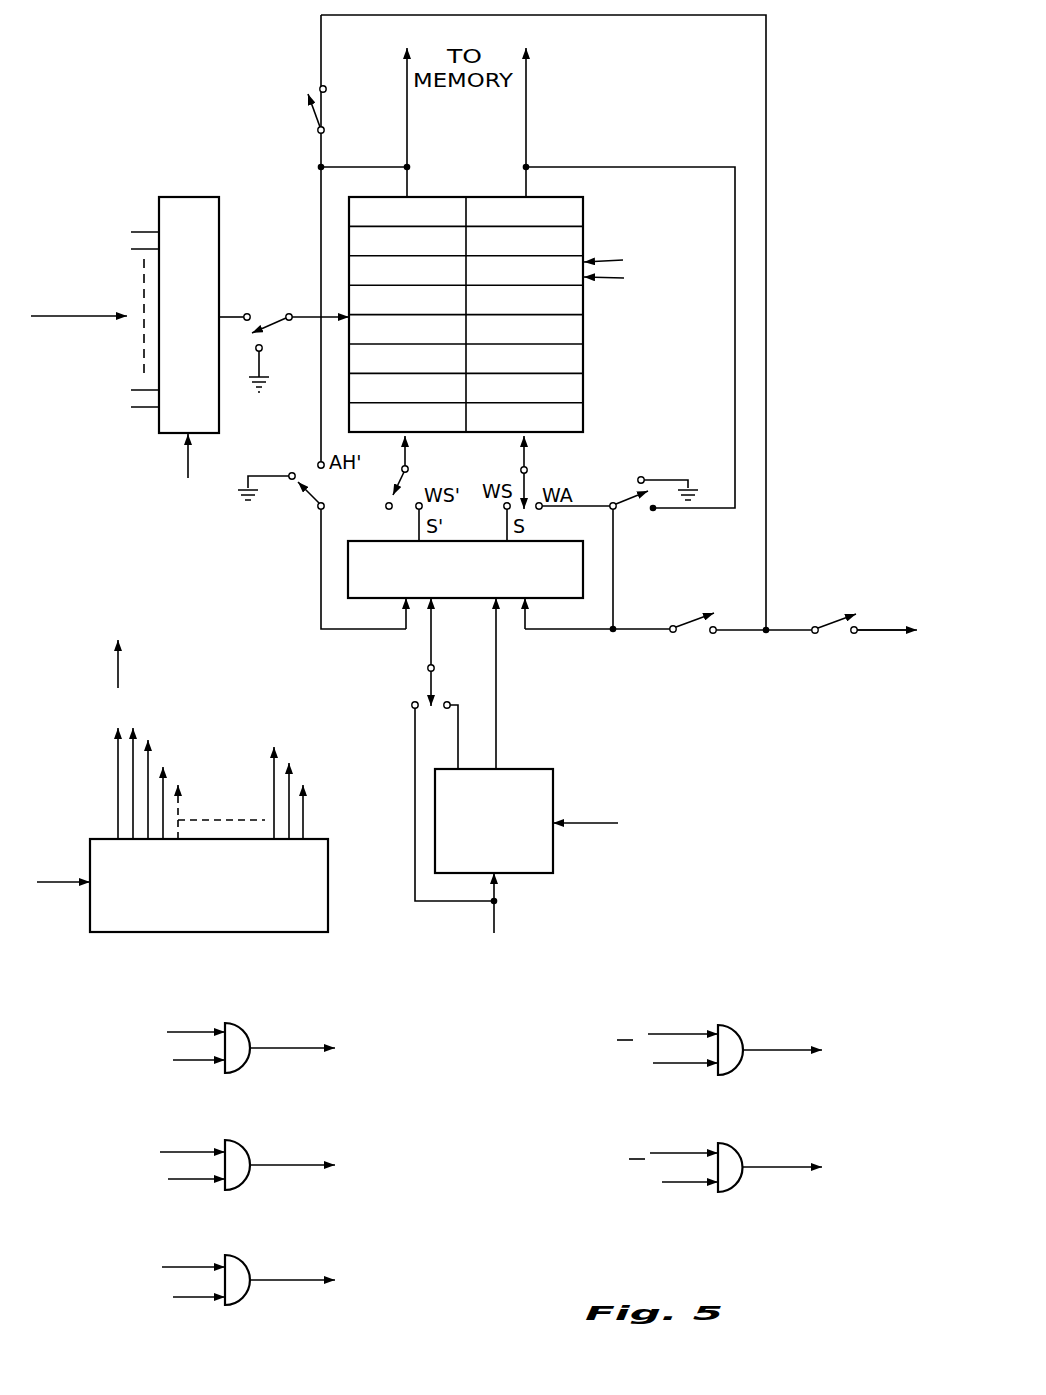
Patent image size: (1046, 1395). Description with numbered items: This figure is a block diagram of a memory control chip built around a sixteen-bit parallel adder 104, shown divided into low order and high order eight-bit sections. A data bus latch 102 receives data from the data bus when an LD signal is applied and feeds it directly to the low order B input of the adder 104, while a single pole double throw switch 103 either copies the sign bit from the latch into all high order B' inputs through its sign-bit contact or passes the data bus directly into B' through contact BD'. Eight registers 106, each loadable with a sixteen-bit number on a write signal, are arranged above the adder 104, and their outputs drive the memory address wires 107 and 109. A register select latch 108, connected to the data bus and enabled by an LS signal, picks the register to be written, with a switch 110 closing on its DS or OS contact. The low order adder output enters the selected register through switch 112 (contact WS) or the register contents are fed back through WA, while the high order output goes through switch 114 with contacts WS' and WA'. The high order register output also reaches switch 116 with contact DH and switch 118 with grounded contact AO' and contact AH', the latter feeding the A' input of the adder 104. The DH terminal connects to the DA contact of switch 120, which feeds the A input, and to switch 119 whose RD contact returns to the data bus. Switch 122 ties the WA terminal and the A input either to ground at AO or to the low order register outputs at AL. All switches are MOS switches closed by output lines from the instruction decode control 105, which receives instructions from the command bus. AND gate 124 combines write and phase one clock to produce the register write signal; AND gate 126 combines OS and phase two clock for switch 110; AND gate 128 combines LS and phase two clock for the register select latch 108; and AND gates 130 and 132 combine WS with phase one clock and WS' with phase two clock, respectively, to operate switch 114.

The data bus latch 102 is at (532, 768).
The single pole double throw switch 103 is at (435, 683).
The adder 104 is at (597, 537).
The instruction decode control circuit arrangement 105 is at (328, 850).
The registers 106 is at (583, 213).
The memory address wire 107 is at (407, 82).
The register select latch 108 is at (199, 196).
The memory address wire 109 is at (527, 82).
The switch 110 is at (272, 322).
The single pole double throw switch 112 is at (521, 470).
The double pole double throw switch 114 is at (407, 475).
The 8 pole single throw switch 116 is at (314, 118).
The 8 pole double throw switch 118 is at (310, 495).
The 8 pole single throw switch 119 is at (840, 616).
The 8 pole single throw switch 120 is at (697, 616).
The 8 pole double throw switch 122 is at (630, 492).
The AND gate 124 is at (238, 1025).
The AND gate 126 is at (244, 1142).
The AND gate 128 is at (244, 1256).
The AND gate 130 is at (738, 1026).
The AND gate 132 is at (744, 1151).